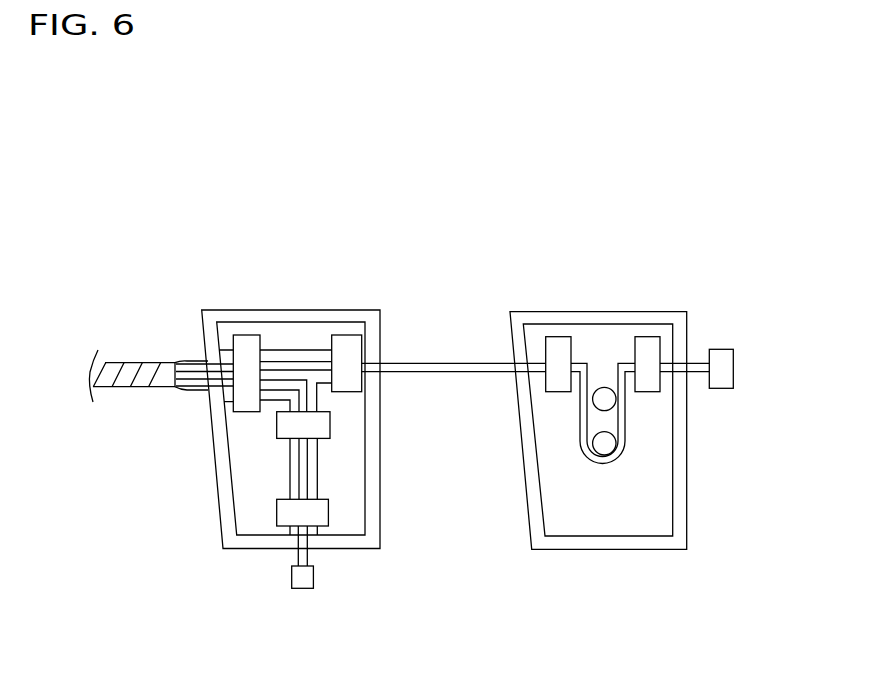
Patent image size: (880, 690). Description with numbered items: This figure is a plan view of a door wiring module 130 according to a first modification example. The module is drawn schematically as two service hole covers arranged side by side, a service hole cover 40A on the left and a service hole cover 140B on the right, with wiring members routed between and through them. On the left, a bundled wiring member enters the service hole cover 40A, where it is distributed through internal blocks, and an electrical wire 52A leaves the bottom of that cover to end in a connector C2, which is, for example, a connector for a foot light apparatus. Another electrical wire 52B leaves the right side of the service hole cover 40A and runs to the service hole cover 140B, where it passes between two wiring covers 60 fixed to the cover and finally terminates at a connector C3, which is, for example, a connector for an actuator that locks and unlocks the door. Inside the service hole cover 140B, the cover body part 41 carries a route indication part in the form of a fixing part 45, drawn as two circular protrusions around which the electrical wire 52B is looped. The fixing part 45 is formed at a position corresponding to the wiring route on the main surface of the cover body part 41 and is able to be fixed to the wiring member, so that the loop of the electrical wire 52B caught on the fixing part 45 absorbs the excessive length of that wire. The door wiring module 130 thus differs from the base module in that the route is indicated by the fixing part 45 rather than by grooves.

The door wiring module 130 is at (173, 225).
The service hole cover 40A is at (270, 309).
The electrical wire 52A is at (309, 562).
The electrical wire 52B is at (442, 372).
The service hole cover 140B is at (598, 311).
The cover body part 41 is at (657, 505).
The wiring cover 60 is at (557, 337).
The fixing part 45 is at (607, 443).
The connector C2 is at (302, 590).
The connector C3 is at (721, 349).